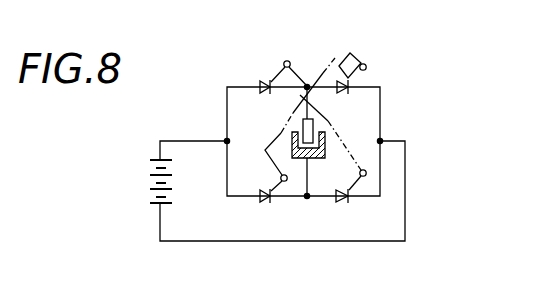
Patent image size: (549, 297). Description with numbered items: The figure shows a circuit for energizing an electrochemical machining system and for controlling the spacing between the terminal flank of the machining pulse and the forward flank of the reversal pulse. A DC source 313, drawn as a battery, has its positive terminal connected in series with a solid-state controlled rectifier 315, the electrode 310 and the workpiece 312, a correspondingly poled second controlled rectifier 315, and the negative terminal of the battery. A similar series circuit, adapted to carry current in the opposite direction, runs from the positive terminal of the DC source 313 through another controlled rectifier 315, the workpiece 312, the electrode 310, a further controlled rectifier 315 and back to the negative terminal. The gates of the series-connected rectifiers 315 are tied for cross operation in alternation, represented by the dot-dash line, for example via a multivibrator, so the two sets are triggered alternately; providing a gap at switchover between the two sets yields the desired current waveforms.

The DC source 313 is at (152, 175).
The workpiece 312 is at (290, 146).
The electrode 310 is at (314, 123).
The solid-state controlled rectifier 315 is at (265, 81).